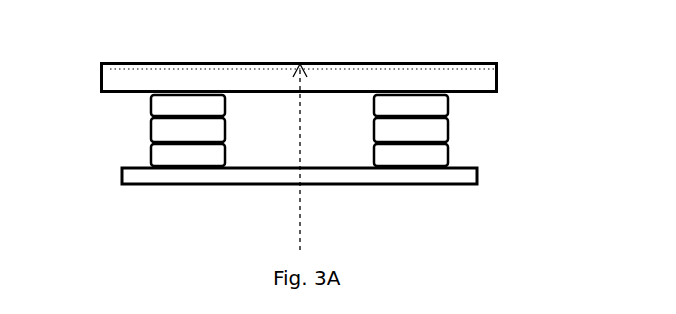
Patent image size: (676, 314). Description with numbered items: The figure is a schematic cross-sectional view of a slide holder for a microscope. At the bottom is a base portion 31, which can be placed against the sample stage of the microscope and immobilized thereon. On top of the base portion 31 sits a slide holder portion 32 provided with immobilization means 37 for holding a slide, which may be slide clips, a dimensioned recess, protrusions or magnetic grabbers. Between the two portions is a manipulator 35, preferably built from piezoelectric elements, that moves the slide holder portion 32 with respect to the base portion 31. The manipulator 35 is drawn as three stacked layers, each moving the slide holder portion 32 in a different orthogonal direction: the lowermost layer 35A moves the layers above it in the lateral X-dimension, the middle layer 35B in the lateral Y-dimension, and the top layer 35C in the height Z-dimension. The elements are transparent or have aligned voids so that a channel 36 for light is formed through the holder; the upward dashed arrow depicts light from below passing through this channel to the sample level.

The base portion 31 is at (480, 170).
The slide holder portion 32 is at (498, 75).
The manipulator 35 is at (323, 151).
The lowermost manipulator layer 35A is at (448, 153).
The middle manipulator layer 35B is at (448, 127).
The top manipulator layer 35C is at (448, 105).
The channel for light 36 is at (350, 153).
The immobilization means 37 is at (420, 71).